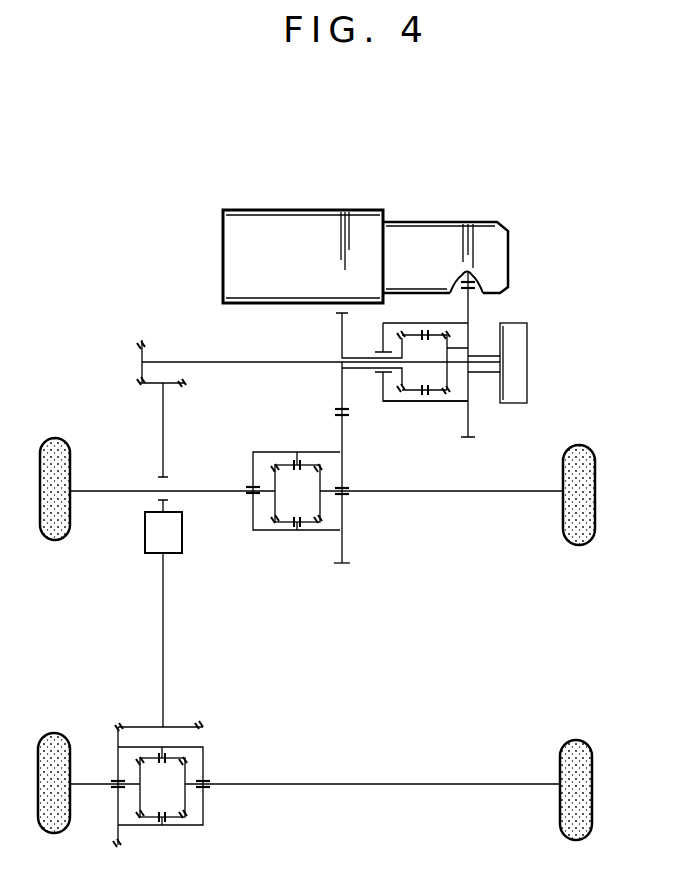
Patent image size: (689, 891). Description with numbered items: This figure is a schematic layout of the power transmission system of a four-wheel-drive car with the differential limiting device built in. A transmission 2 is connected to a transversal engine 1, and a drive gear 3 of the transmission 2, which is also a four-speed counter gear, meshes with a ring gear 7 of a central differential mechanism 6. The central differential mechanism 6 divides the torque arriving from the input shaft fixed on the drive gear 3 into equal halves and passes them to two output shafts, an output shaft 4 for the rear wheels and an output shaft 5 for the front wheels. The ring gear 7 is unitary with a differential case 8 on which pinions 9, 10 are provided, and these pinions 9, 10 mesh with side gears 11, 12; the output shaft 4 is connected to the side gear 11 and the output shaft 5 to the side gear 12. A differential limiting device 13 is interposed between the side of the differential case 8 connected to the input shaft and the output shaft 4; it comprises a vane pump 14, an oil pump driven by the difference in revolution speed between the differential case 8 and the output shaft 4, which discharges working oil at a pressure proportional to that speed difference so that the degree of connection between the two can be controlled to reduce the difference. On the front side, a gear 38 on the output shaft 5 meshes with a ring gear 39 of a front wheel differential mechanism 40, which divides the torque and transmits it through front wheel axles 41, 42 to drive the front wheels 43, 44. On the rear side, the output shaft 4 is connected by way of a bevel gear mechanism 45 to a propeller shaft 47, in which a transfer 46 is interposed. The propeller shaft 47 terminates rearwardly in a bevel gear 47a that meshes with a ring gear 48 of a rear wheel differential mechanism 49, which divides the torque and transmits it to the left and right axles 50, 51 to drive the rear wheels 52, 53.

The transversal engine 1 is at (297, 212).
The transmission 2 is at (441, 232).
The drive gear 3 is at (480, 276).
The output shaft for the rear wheels 4 is at (283, 361).
The output shaft for the front wheels 5 is at (364, 358).
The central differential mechanism 6 is at (425, 404).
The ring gear 7 is at (470, 307).
The differential case 8 is at (426, 328).
The pinion 9 is at (399, 332).
The pinion 10 is at (410, 396).
The side gear 11 is at (436, 335).
The side gear 12 is at (382, 386).
The differential limiting device 13 is at (519, 343).
The vane pump 14 is at (516, 389).
The gear 38 is at (338, 393).
The ring gear 39 is at (344, 437).
The front wheel differential mechanism 40 is at (275, 442).
The front wheel axle 41 is at (202, 489).
The front wheel axle 42 is at (471, 491).
The front wheel 43 is at (72, 456).
The front wheel 44 is at (596, 475).
The bevel gear mechanism 45 is at (141, 355).
The transfer 46 is at (183, 540).
The propeller shaft 47 is at (165, 668).
The bevel gear 47a is at (204, 727).
The ring gear 48 is at (115, 738).
The rear wheel differential mechanism 49 is at (216, 769).
The left rear axle 50 is at (90, 788).
The right rear axle 51 is at (371, 784).
The rear wheel 52 is at (58, 834).
The rear wheel 53 is at (594, 813).